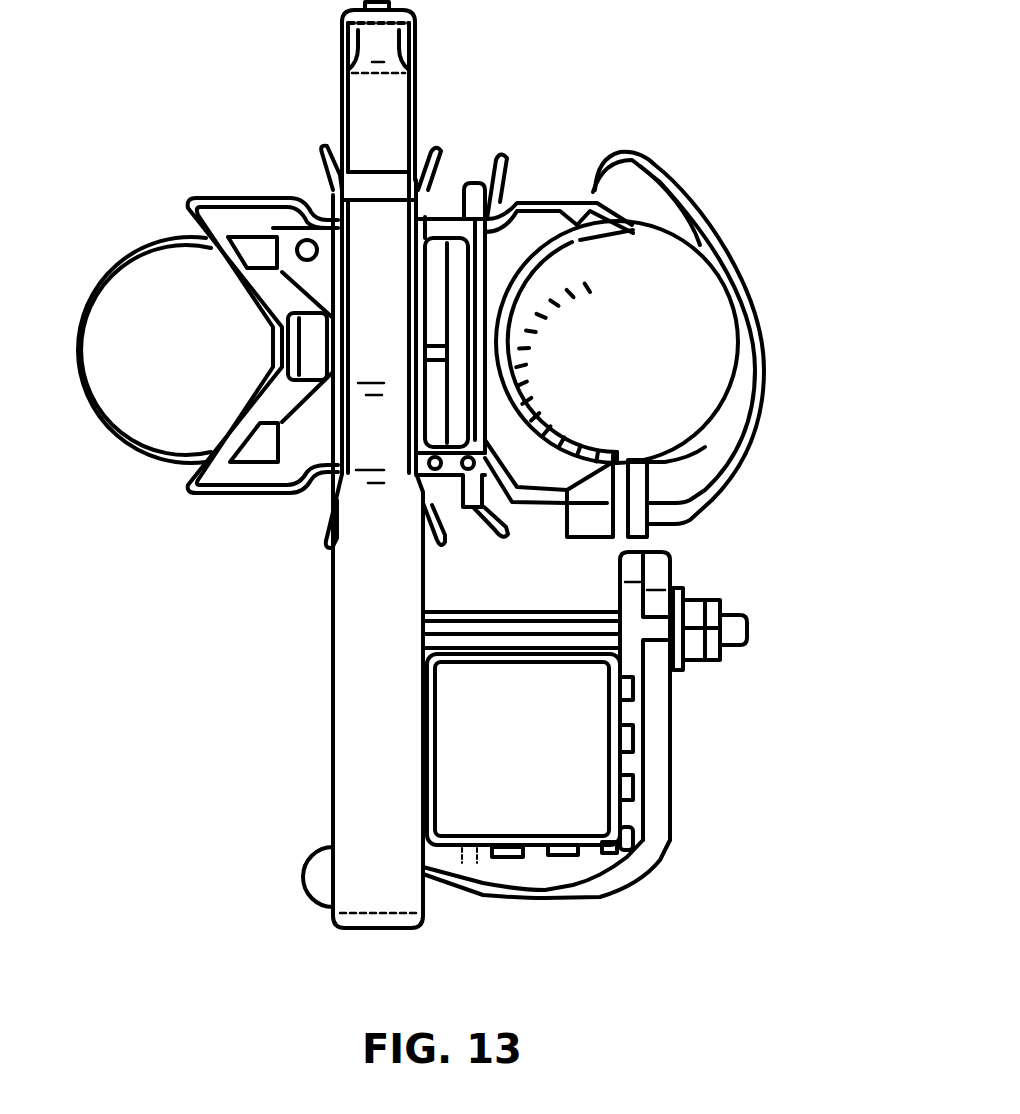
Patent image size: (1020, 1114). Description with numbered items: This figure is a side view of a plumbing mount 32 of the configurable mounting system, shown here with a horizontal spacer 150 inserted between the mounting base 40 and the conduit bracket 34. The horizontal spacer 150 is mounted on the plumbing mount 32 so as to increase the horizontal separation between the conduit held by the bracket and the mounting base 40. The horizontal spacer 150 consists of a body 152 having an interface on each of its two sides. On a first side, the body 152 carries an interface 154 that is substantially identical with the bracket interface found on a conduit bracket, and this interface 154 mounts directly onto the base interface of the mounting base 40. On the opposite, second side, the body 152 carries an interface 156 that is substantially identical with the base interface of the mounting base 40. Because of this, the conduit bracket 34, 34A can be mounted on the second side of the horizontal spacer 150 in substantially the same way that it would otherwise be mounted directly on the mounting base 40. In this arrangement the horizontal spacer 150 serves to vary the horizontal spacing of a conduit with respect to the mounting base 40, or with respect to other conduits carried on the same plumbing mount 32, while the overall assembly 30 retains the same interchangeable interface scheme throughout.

The mounting assembly 30 is at (767, 165).
The plumbing mount 32 is at (680, 90).
The conduit bracket 34 is at (750, 272).
The conduit bracket 34A is at (132, 252).
The mounting base 40 is at (322, 600).
The horizontal spacer 150 is at (447, 215).
The body 152 is at (448, 475).
The interface 154 is at (420, 237).
The interface 156 is at (485, 245).